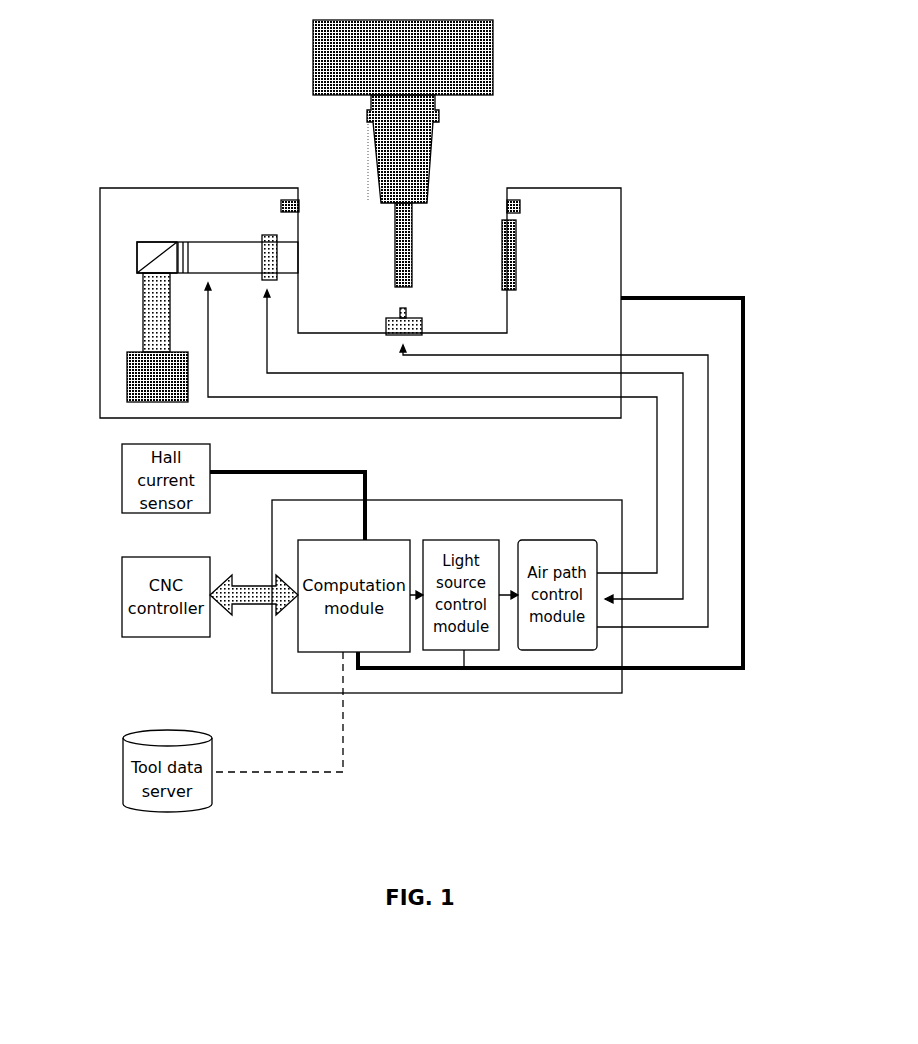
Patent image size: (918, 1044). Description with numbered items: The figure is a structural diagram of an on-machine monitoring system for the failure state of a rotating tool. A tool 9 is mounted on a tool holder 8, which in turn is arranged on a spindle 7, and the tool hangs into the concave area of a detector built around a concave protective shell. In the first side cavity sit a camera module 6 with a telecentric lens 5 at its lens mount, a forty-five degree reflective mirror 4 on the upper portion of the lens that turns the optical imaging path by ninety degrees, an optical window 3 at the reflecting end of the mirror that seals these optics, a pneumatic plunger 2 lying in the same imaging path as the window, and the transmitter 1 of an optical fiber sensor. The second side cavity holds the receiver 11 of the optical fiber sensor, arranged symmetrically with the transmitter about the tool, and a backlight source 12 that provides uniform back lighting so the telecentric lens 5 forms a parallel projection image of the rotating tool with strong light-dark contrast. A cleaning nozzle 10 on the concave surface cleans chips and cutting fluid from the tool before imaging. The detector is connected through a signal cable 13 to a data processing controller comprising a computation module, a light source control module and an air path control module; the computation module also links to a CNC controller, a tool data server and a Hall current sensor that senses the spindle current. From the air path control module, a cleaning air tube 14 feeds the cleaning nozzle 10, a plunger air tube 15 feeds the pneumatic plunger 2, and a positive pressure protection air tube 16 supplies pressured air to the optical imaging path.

The transmitter of the optical fiber sensor 1 is at (290, 200).
The pneumatic plunger 2 is at (267, 238).
The optical window 3 is at (182, 244).
The 45° reflective mirror 4 is at (136, 256).
The telecentric lens 5 is at (142, 317).
The camera module 6 is at (127, 376).
The spindle 7 is at (492, 52).
The tool holder 8 is at (430, 168).
The tool 9 is at (411, 258).
The cleaning nozzle 10 is at (406, 314).
The receiver of the optical fiber sensor 11 is at (515, 198).
The backlight source 12 is at (516, 246).
The signal cable 13 is at (747, 380).
The cleaning air tube 14 is at (712, 466).
The plunger air tube 15 is at (686, 517).
The positive pressure protection air tube 16 is at (660, 553).